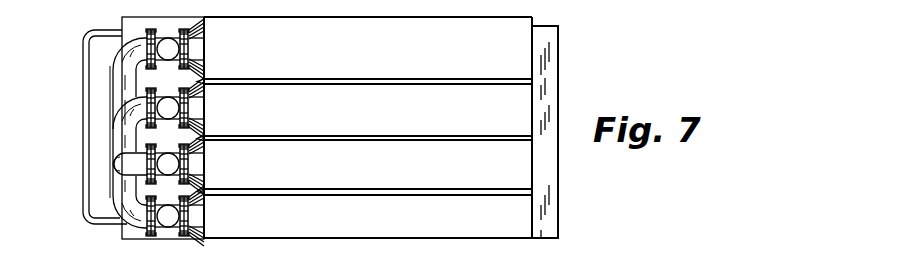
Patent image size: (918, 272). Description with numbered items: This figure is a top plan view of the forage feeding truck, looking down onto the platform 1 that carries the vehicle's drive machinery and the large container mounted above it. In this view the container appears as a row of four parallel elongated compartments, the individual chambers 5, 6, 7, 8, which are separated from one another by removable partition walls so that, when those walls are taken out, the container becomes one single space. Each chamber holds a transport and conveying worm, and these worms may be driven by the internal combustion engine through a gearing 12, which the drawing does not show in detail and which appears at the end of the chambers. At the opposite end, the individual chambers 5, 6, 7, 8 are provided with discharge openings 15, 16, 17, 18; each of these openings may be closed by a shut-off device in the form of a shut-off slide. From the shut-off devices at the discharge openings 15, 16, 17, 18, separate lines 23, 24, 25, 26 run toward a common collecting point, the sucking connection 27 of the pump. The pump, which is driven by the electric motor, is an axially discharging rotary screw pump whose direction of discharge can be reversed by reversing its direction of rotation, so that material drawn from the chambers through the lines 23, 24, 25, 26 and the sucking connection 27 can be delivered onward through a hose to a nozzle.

The platform 1 is at (175, 240).
The individual chamber 5 is at (361, 230).
The individual chamber 6 is at (361, 180).
The individual chamber 7 is at (365, 126).
The individual chamber 8 is at (366, 66).
The gearing 12 is at (550, 72).
The discharge opening 15 is at (206, 212).
The discharge opening 16 is at (206, 160).
The discharge opening 17 is at (206, 104).
The discharge opening 18 is at (206, 45).
The separate line 23 is at (120, 222).
The separate line 24 is at (113, 166).
The separate line 25 is at (128, 110).
The separate line 26 is at (125, 53).
The sucking connection 27 is at (112, 153).